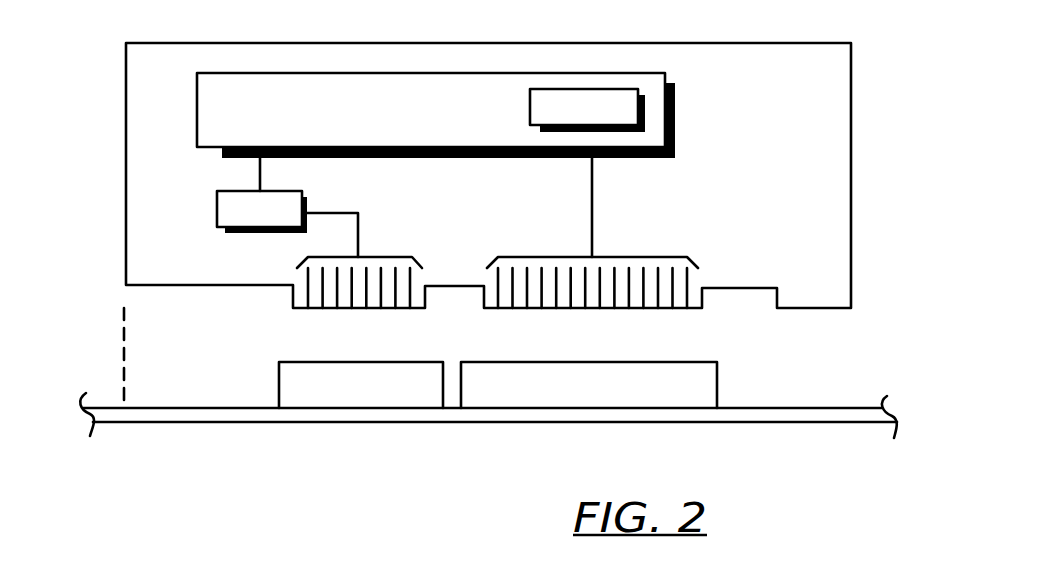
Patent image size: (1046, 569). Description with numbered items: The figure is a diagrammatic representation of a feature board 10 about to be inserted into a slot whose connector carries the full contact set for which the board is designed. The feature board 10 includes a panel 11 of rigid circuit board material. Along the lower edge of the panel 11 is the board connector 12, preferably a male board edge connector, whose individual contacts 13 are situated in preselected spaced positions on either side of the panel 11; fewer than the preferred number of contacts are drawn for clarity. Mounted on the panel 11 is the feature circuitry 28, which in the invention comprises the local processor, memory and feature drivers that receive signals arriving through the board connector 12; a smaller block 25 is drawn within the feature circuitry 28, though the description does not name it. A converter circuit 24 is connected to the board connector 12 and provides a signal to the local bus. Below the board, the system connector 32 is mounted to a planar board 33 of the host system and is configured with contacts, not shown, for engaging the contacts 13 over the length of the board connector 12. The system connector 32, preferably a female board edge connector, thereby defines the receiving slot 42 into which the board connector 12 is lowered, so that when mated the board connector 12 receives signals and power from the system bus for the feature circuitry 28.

The feature board 10 is at (439, 156).
The panel 11 is at (126, 143).
The board connector 12 is at (535, 310).
The contacts 13 is at (474, 270).
The converter circuit 24 is at (217, 203).
The memory block 25 is at (633, 98).
The feature circuitry 28 is at (197, 110).
The system connector 32 is at (496, 400).
The planar board 33 is at (272, 422).
The receiving slot 42 is at (124, 345).